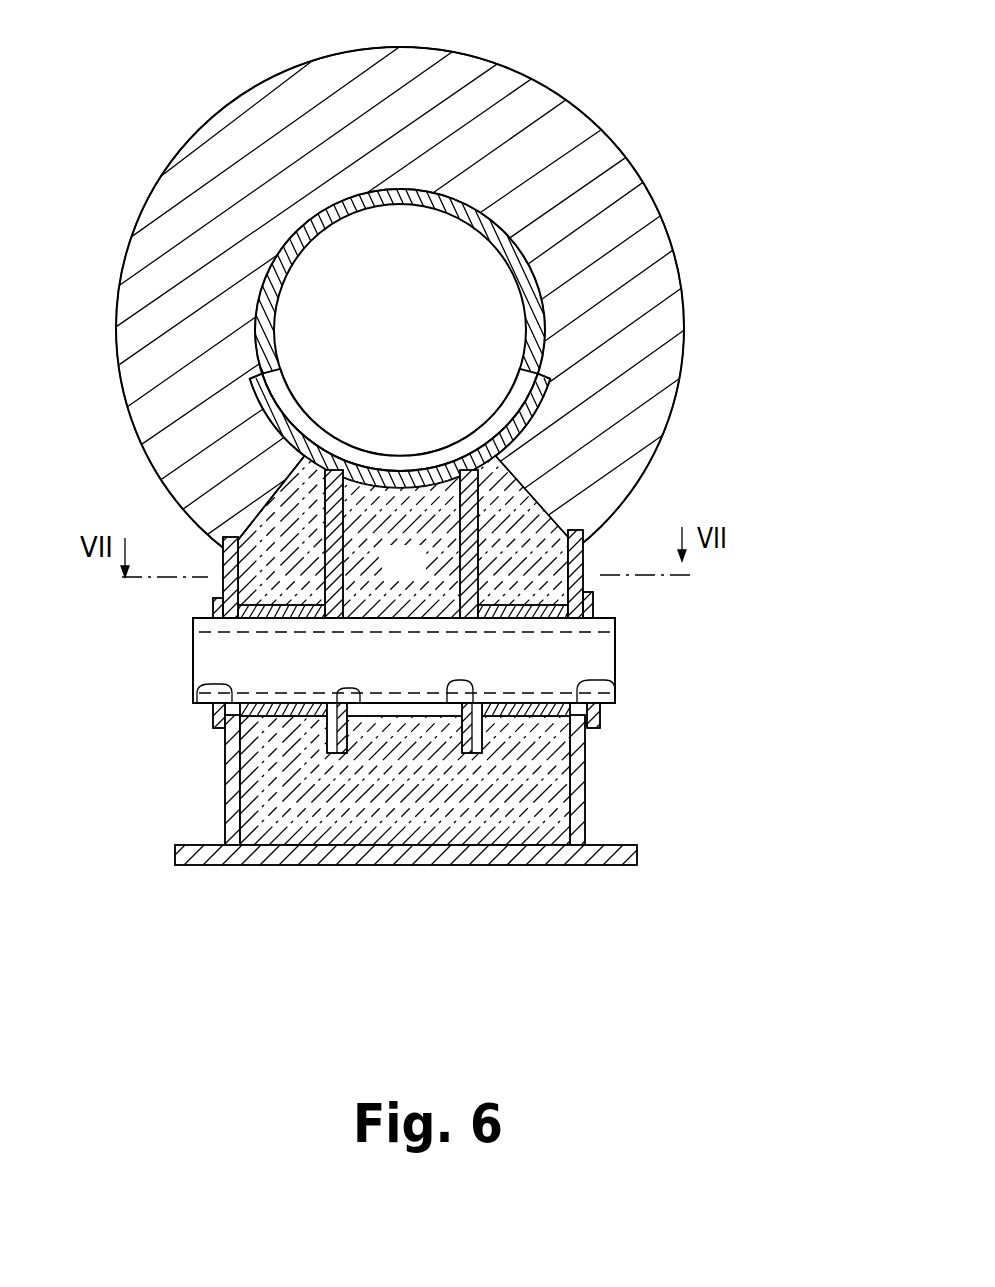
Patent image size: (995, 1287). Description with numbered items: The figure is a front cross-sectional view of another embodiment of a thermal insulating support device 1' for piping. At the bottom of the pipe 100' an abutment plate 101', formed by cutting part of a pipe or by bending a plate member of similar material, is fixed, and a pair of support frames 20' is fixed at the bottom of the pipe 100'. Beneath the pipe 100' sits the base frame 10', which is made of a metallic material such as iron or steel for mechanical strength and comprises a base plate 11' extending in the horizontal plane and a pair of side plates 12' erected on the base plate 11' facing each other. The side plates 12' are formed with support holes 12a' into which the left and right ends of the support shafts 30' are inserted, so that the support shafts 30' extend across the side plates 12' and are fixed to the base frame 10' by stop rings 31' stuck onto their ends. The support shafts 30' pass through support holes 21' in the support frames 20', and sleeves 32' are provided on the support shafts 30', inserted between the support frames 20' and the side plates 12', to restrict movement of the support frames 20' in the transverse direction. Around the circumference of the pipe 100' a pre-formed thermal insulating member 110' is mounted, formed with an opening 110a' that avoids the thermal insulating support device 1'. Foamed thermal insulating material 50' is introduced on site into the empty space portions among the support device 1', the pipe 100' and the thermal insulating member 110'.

The thermal insulating member 110' is at (400, 411).
The pipe 100' is at (519, 329).
The abutment plate 101' is at (511, 430).
The opening 110a' is at (184, 498).
The foamed thermal insulating material 50' is at (403, 536).
The stop ring 31' is at (401, 576).
The support shaft 30' is at (404, 660).
The thermal insulating support device 1' is at (456, 721).
The support hole 12a' is at (403, 694).
The base frame 10' is at (494, 780).
The side plate 12' is at (404, 780).
The base plate 11' is at (366, 861).
The sleeve 32' is at (410, 822).
The support hole 21' is at (405, 802).
The support frame 20' is at (416, 845).